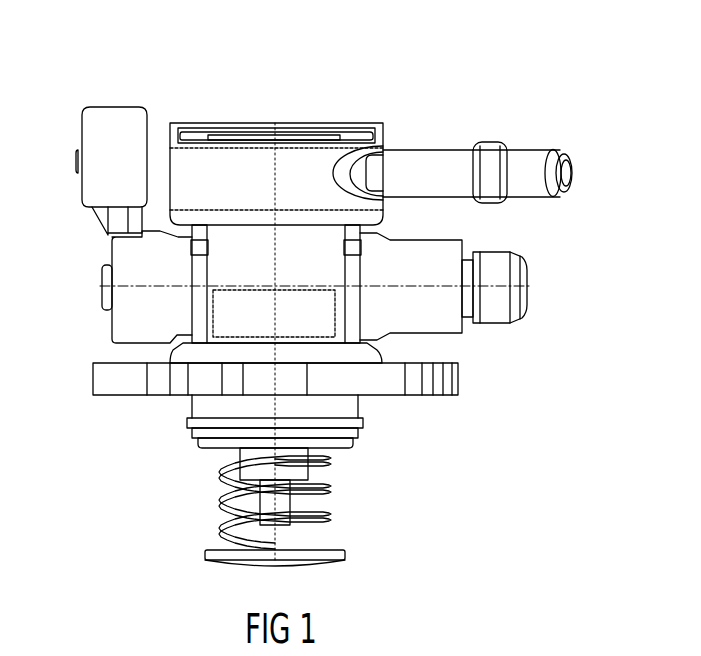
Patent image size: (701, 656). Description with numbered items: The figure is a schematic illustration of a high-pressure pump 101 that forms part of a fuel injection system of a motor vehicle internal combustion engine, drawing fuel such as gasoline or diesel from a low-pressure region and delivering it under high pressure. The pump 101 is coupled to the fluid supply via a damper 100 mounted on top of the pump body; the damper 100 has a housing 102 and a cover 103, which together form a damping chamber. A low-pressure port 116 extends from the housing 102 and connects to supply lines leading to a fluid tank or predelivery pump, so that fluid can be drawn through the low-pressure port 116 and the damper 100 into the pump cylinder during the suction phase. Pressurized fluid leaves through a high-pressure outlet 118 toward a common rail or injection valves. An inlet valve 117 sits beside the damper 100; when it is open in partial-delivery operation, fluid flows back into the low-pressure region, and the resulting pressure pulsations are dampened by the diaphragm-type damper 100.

The damper 100 is at (393, 119).
The high-pressure pump 101 is at (568, 273).
The housing 102 is at (383, 140).
The cover 103 is at (230, 140).
The low-pressure port 116 is at (568, 172).
The inlet valve 117 is at (113, 123).
The high-pressure outlet 118 is at (508, 298).